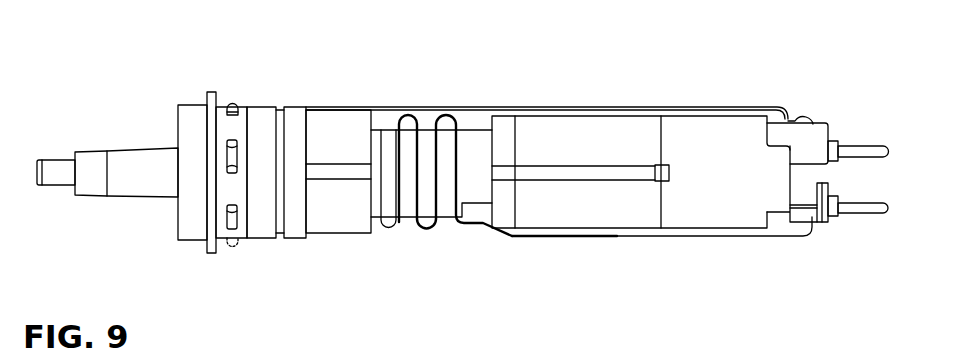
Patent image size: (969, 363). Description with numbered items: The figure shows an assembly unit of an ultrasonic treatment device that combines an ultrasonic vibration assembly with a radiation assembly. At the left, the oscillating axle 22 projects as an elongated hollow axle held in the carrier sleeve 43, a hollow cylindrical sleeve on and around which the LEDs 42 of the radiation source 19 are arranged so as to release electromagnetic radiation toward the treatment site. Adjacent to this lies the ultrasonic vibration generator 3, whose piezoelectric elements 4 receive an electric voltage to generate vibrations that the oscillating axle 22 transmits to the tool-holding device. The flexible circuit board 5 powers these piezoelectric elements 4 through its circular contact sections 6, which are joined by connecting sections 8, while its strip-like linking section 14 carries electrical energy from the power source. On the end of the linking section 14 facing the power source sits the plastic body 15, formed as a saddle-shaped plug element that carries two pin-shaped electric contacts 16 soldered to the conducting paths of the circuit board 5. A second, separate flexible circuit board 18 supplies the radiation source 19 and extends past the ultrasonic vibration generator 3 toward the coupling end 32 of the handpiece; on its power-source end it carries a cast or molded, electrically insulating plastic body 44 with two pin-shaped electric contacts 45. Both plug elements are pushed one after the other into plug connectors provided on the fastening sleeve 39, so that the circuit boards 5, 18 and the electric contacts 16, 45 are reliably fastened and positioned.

The oscillating axle 22 is at (125, 130).
The radiation source 19 is at (238, 91).
The LEDs 42 is at (235, 226).
The carrier sleeve 43 is at (284, 253).
The second circuit board 18 is at (637, 97).
The connecting sections 8 is at (418, 113).
The ultrasonic vibration generator 3 is at (437, 112).
The contact sections 6 is at (403, 212).
The piezoelectric elements 4 is at (449, 218).
The circuit board 5 is at (613, 246).
The linking section 14 is at (677, 237).
The fastening sleeve 39 is at (715, 125).
The coupling end 32 is at (905, 175).
The plastic body 44 is at (831, 111).
The electric contacts 45 is at (884, 138).
The plastic body 15 is at (833, 231).
The electric contacts 16 is at (886, 223).